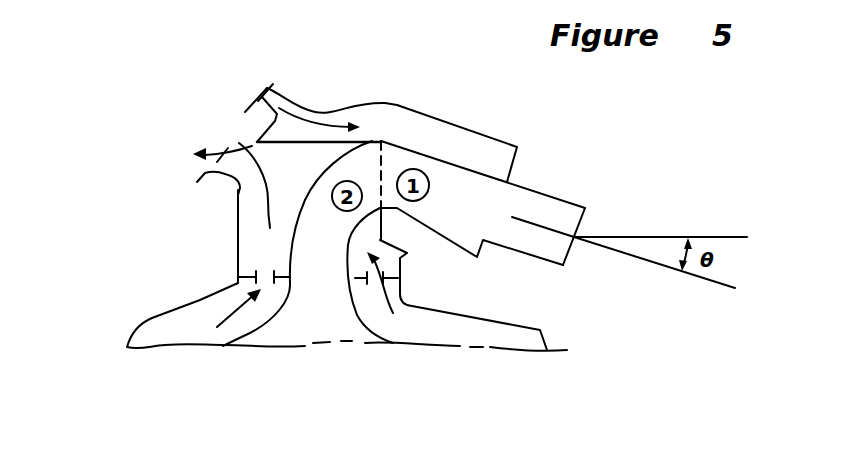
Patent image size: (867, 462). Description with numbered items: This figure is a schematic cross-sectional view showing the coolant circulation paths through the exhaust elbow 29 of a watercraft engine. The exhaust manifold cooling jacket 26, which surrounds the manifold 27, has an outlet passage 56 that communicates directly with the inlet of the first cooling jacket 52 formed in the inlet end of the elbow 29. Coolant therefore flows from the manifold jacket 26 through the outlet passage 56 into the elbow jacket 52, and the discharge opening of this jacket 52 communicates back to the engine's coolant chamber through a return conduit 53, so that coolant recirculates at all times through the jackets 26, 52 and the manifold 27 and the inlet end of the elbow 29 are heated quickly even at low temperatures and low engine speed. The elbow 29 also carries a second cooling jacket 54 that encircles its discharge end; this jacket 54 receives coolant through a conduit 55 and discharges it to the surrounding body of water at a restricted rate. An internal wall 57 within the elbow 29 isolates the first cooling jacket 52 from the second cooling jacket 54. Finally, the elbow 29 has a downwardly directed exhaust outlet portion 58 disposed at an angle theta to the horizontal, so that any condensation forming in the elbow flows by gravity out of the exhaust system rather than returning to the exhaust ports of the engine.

The exhaust manifold cooling jacket 26 is at (145, 312).
The manifold 27 is at (345, 327).
The exhaust elbow 29 is at (383, 95).
The first cooling jacket 52 is at (252, 255).
The return conduit 53 is at (219, 173).
The second cooling jacket 54 is at (467, 142).
The conduit 55 is at (277, 99).
The outlet passage 56 is at (232, 283).
The internal wall 57 is at (257, 144).
The exhaust outlet portion 58 is at (550, 207).